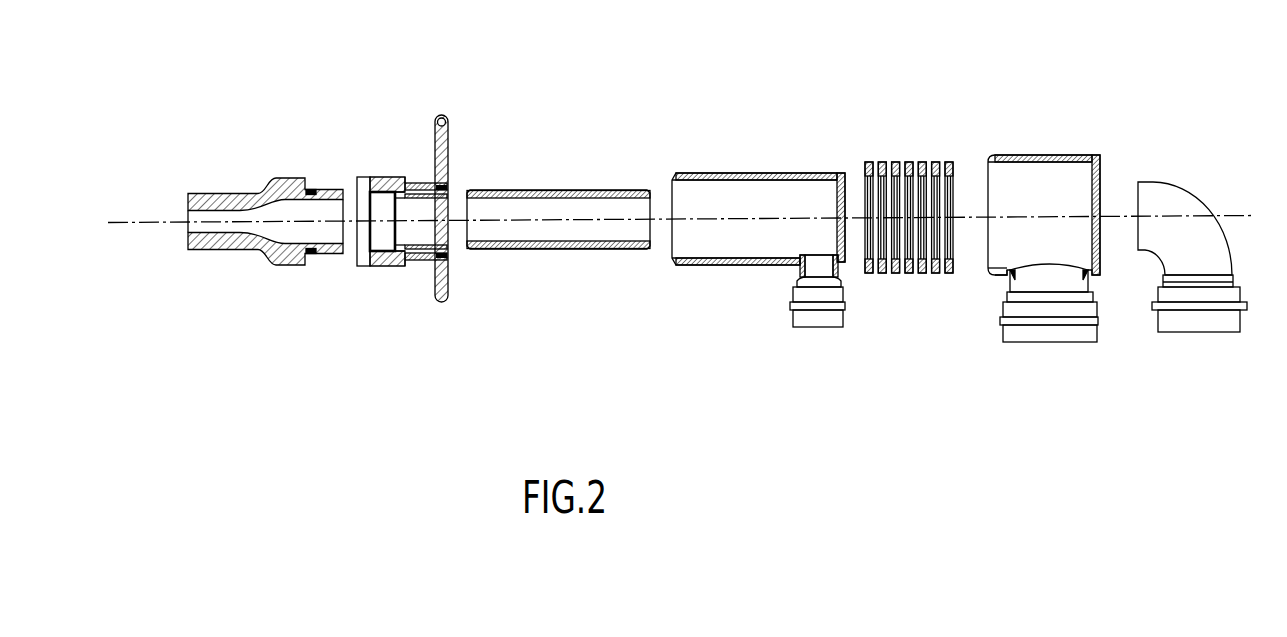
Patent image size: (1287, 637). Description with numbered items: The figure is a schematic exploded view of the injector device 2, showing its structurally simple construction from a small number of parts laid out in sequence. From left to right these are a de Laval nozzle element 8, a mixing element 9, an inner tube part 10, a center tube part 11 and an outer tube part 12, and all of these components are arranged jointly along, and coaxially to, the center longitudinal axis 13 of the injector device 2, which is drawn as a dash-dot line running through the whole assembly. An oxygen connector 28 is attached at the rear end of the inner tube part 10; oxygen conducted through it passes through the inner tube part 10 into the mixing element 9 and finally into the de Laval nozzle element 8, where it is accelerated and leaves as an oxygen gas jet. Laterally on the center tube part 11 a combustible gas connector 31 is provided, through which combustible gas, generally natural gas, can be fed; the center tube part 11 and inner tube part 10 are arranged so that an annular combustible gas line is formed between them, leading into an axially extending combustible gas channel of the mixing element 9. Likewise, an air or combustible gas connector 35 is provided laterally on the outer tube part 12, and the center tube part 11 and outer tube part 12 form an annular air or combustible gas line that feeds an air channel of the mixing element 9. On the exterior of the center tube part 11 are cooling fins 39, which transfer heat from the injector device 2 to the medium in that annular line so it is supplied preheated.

The injector device 2 is at (923, 87).
The de Laval nozzle element 8 is at (283, 143).
The mixing element 9 is at (390, 142).
The inner tube part 10 is at (532, 142).
The center tube part 11 is at (735, 138).
The outer tube part 12 is at (1038, 128).
The center longitudinal axis 13 is at (153, 222).
The oxygen connector 28 is at (1202, 335).
The combustible gas connector 31 is at (812, 333).
The air or combustible gas connector 35 is at (1055, 345).
The cooling fins 39 is at (917, 327).